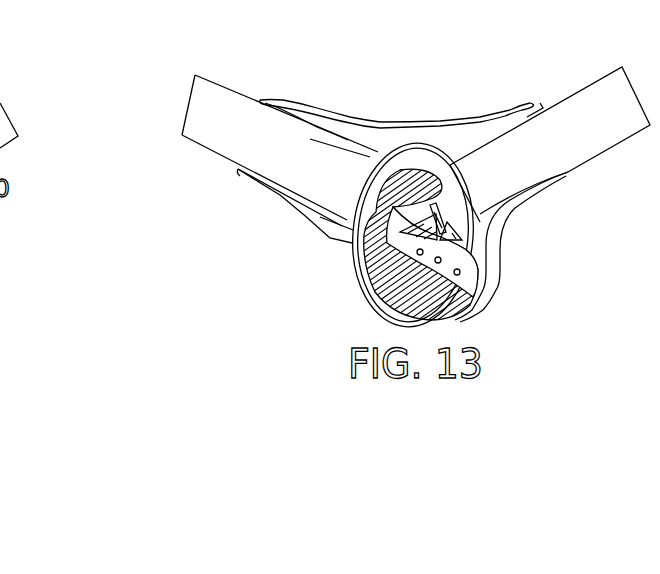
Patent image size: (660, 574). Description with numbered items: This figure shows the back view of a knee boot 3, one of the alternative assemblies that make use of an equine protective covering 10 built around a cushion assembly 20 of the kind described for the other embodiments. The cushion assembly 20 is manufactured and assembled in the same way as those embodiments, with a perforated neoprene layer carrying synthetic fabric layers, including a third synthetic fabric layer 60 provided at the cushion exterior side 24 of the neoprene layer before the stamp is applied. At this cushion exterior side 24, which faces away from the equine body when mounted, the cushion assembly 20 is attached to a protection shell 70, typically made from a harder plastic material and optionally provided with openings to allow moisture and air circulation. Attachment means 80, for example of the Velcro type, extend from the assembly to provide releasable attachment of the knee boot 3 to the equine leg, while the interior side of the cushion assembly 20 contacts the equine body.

The equine protective covering 10 is at (352, 50).
The cushion assembly 20 is at (354, 120).
The cushion exterior side 24 is at (497, 129).
The third synthetic fabric layer 60 is at (467, 135).
The protection shell 70 is at (378, 261).
The attachment means 80 is at (191, 137).
The knee boot 3 is at (521, 266).